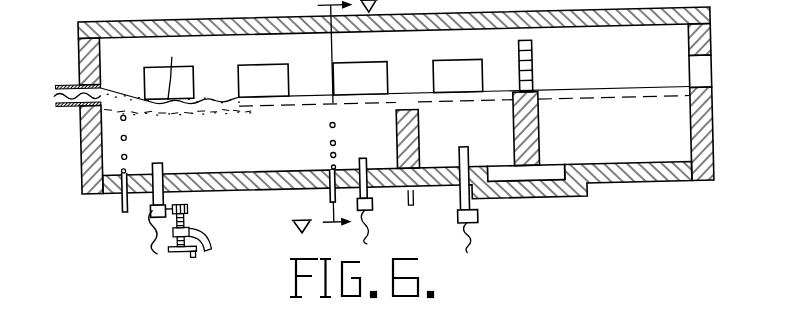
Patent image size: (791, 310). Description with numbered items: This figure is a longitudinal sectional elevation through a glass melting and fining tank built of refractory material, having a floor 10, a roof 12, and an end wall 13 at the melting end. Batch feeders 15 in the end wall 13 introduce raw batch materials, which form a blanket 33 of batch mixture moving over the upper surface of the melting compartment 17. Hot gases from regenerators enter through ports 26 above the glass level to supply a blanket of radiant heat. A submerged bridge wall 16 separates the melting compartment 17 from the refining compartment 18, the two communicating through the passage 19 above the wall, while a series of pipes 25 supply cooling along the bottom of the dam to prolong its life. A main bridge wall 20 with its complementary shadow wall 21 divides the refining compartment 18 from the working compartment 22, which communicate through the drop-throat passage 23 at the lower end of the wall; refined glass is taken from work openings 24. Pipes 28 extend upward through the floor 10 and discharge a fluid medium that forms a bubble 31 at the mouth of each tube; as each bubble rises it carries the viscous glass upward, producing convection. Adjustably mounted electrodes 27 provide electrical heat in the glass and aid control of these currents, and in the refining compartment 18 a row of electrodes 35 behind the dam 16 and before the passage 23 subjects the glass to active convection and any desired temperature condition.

The floor 10 is at (390, 112).
The roof 12 is at (259, 36).
The end wall 13 is at (86, 127).
The batch feeders 15 is at (52, 96).
The submerged bridge wall 16 is at (397, 148).
The melting compartment 17 is at (192, 148).
The refining compartment 18 is at (458, 140).
The passage 19 is at (408, 111).
The main bridge wall 20 is at (533, 133).
The shadow wall 21 is at (532, 73).
The working compartment 22 is at (626, 133).
The passage 23 is at (539, 188).
The work openings 24 is at (699, 85).
The pipes 25 is at (408, 211).
The ports 26 is at (247, 86).
The electrodes 27 is at (144, 210).
The pipes 28 is at (113, 201).
The bubble 31 is at (115, 140).
The blanket 33 is at (173, 70).
The electrodes 35 is at (473, 226).